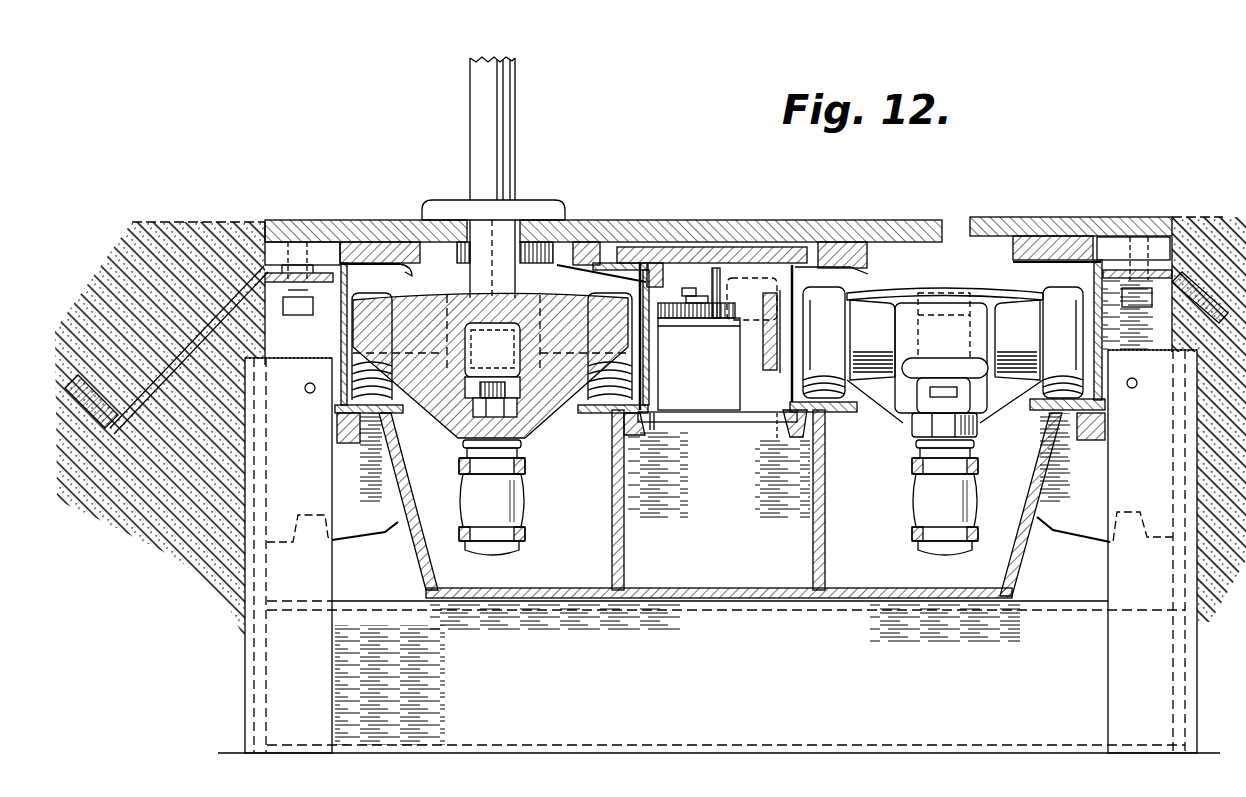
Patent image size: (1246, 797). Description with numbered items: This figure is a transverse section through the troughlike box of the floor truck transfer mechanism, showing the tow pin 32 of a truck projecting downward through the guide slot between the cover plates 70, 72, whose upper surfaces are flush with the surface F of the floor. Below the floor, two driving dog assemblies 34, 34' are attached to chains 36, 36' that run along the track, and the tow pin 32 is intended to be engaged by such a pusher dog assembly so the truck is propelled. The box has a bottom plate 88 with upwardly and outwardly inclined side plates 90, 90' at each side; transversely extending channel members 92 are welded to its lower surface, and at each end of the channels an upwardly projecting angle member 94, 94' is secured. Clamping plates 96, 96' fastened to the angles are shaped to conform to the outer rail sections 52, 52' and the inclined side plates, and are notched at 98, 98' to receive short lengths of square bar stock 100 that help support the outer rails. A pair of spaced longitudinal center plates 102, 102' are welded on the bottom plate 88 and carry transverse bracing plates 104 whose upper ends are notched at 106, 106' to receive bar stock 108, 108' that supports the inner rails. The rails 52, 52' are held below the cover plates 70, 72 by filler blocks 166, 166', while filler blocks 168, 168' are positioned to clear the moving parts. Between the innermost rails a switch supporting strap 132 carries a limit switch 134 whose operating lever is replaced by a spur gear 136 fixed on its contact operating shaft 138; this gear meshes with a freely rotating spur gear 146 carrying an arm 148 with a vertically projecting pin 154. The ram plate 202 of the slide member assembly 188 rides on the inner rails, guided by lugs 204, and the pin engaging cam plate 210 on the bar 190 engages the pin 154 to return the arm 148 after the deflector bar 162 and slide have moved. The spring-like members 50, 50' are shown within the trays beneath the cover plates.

The tow pin 32 is at (516, 146).
The driving dog assembly 34 is at (490, 376).
The driving dog assembly 34' is at (945, 369).
The chain 36 is at (513, 497).
The chain 36' is at (918, 497).
The spring 50 is at (492, 367).
The spring (second) 50' is at (973, 363).
The rail section 52 is at (492, 352).
The rail section 52' is at (947, 336).
The cover plate 70 is at (335, 220).
The cover plate 72 is at (1088, 217).
The bottom plate 88 is at (758, 600).
The side plate 90 is at (400, 501).
The side plate 90' is at (1037, 504).
The channel member 92 is at (667, 691).
The angle member 94 is at (193, 487).
The angle member 94' is at (1177, 485).
The clamping plate 96 is at (331, 392).
The clamping plate 96' is at (1105, 400).
The notch 98 is at (366, 458).
The notch 98' is at (1067, 458).
The square bar stock 100 is at (337, 428).
The center plate 102 is at (650, 500).
The center plate 102' is at (790, 500).
The bracing plate 104 is at (730, 503).
The notch 106 is at (672, 435).
The notch 106' is at (778, 442).
The bar stock 108 is at (644, 452).
The bar stock 108' is at (772, 428).
The switch supporting strap 132 is at (698, 410).
The limit switch 134 is at (716, 336).
The spur gear 136 is at (690, 312).
The contact operating shaft 138 is at (708, 318).
The spur gear 146 is at (752, 312).
The arm 148 is at (690, 310).
The pin 154 is at (735, 265).
The deflector bar 162 is at (565, 243).
The filler block 166 is at (380, 225).
The filler block 166' is at (1053, 223).
The filler block 168 is at (607, 227).
The filler block 168' is at (864, 229).
The slide member assembly 188 is at (798, 274).
The bar 190 is at (770, 370).
The ram plate 202 is at (708, 247).
The lug 204 is at (665, 270).
The pin engaging cam plate 210 is at (778, 286).
The surface of the floor F is at (204, 221).